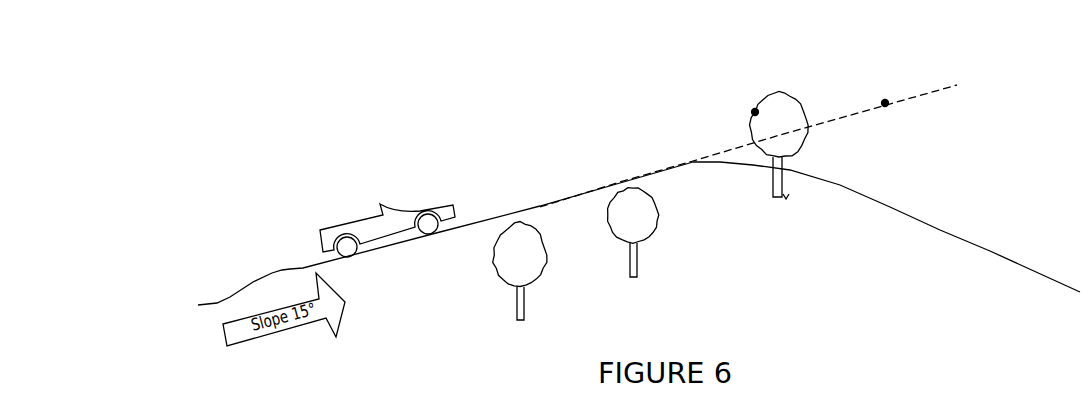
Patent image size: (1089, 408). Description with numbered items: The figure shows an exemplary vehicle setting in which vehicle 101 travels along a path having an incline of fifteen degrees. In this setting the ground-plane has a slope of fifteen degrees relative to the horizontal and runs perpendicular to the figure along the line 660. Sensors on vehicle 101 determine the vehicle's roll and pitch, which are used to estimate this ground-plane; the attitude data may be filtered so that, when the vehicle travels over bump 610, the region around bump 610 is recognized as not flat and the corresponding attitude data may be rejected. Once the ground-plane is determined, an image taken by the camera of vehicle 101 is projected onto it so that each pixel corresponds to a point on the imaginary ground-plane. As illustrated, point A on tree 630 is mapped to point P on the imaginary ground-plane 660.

The bump 610 is at (281, 269).
The vehicle 101 is at (437, 207).
The line 660 is at (720, 153).
The tree 630 is at (803, 147).
The point A is at (755, 109).
The point P is at (883, 101).